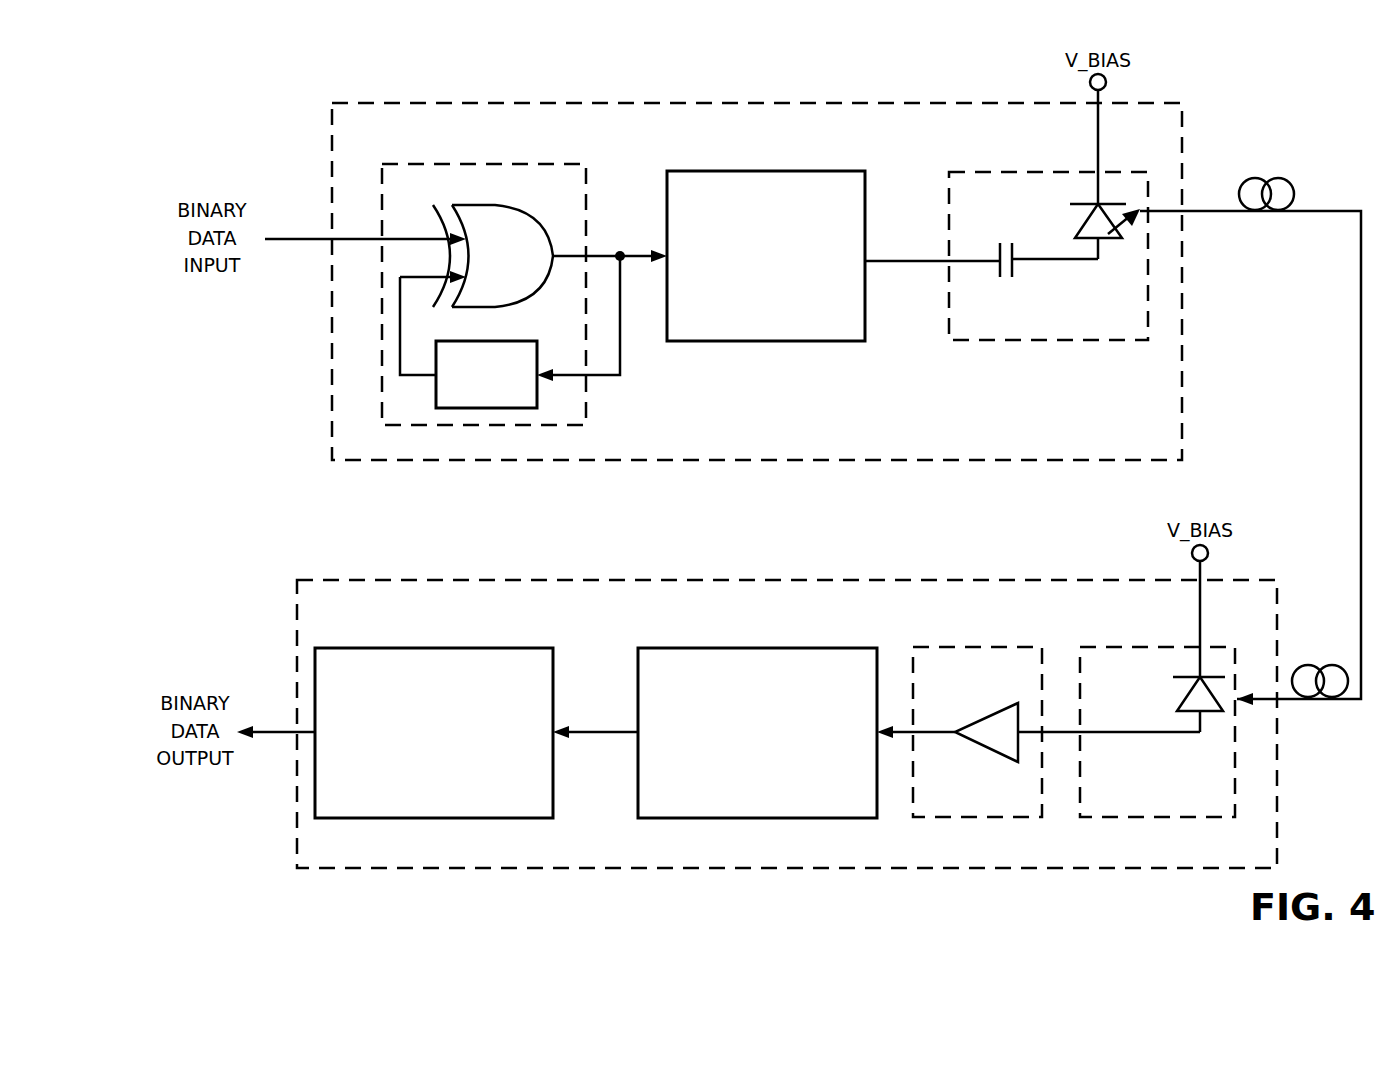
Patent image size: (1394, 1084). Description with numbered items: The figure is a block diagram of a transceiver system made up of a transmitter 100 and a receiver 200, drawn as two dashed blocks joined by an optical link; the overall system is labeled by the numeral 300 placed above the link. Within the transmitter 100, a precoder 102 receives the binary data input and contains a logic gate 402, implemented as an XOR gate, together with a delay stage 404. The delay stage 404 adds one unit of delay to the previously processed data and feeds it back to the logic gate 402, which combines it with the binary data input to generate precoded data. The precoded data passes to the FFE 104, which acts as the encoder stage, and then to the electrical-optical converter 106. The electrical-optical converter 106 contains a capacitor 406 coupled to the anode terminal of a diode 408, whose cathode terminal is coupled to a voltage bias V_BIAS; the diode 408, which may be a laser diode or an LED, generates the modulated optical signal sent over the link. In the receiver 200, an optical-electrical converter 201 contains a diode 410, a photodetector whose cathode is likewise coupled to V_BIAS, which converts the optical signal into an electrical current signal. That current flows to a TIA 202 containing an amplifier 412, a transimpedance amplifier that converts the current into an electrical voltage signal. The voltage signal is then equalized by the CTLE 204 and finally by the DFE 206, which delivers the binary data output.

The transmitter 100 is at (400, 103).
The precoder 102 is at (432, 164).
The logic gate 402 is at (483, 205).
The delay stage 404 is at (486, 374).
The FFE 104 is at (707, 171).
The electrical-optical converter 106 is at (1012, 172).
The capacitor 406 is at (1017, 270).
The diode 408 is at (1080, 232).
The optical communication system 300 is at (1286, 98).
The receiver 200 is at (350, 580).
The DFE 206 is at (365, 648).
The CTLE 204 is at (690, 648).
The TIA 202 is at (937, 647).
The amplifier 412 is at (1007, 707).
The optical-electrical converter 201 is at (1097, 647).
The diode 410 is at (1183, 705).